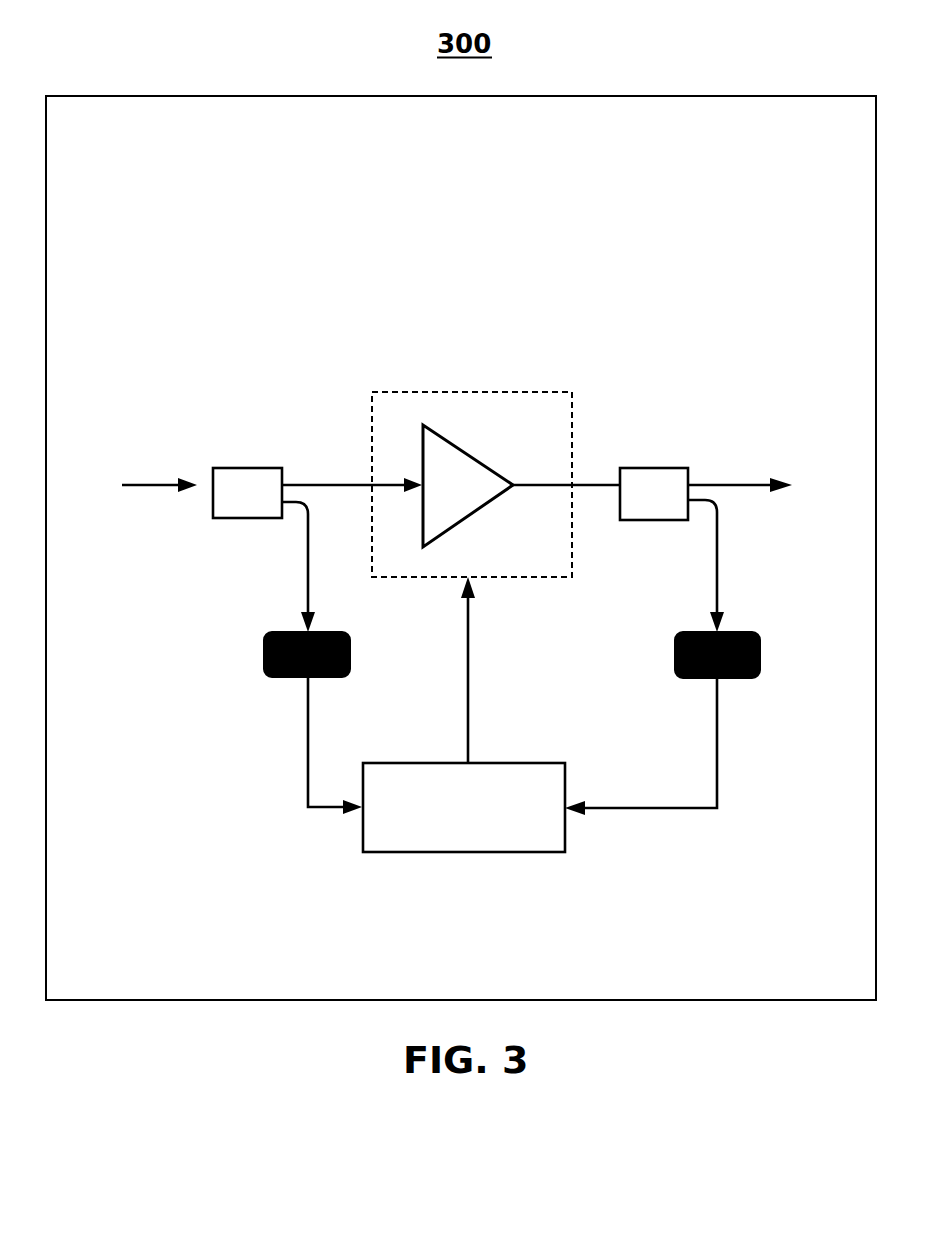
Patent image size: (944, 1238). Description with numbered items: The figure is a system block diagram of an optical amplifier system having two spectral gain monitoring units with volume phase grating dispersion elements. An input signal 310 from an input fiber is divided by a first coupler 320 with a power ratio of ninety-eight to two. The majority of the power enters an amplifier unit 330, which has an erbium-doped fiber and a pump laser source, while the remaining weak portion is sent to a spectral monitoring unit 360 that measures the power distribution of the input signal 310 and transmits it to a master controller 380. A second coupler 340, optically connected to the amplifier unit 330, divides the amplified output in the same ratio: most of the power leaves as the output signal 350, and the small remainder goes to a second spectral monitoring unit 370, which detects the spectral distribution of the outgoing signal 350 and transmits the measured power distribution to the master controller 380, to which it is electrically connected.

The input signal 310 is at (157, 483).
The first coupler 320 is at (247, 468).
The amplifier unit 330 is at (557, 398).
The second coupler 340 is at (673, 473).
The output signal 350 is at (748, 485).
The spectral monitoring unit 360 is at (280, 677).
The second spectral monitoring unit 370 is at (675, 678).
The master controller 380 is at (557, 820).